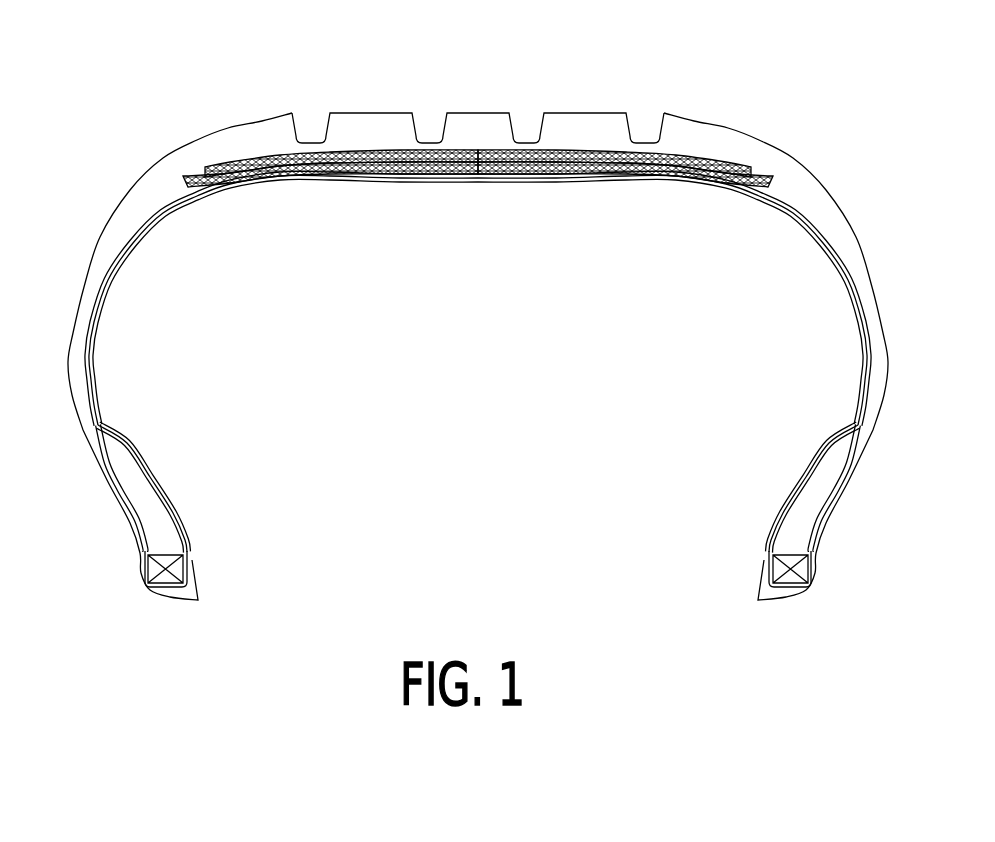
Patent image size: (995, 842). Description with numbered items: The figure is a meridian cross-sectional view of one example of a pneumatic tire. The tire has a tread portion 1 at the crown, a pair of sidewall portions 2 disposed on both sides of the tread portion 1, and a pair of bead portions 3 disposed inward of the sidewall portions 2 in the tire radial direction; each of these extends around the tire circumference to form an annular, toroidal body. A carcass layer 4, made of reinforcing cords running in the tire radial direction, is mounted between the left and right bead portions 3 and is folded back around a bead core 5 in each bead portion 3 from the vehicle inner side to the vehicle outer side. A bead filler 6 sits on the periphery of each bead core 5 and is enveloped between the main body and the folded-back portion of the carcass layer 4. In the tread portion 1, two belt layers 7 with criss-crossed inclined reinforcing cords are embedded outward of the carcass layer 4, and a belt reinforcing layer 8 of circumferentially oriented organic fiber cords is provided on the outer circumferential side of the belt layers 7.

The tread portion 1 is at (597, 100).
The sidewall portions 2 is at (94, 253).
The bead portions 3 is at (137, 553).
The carcass layer 4 is at (800, 210).
The bead core 5 is at (180, 568).
The bead filler 6 is at (158, 527).
The belt layers 7 is at (618, 173).
The belt reinforcing layer 8 is at (672, 157).